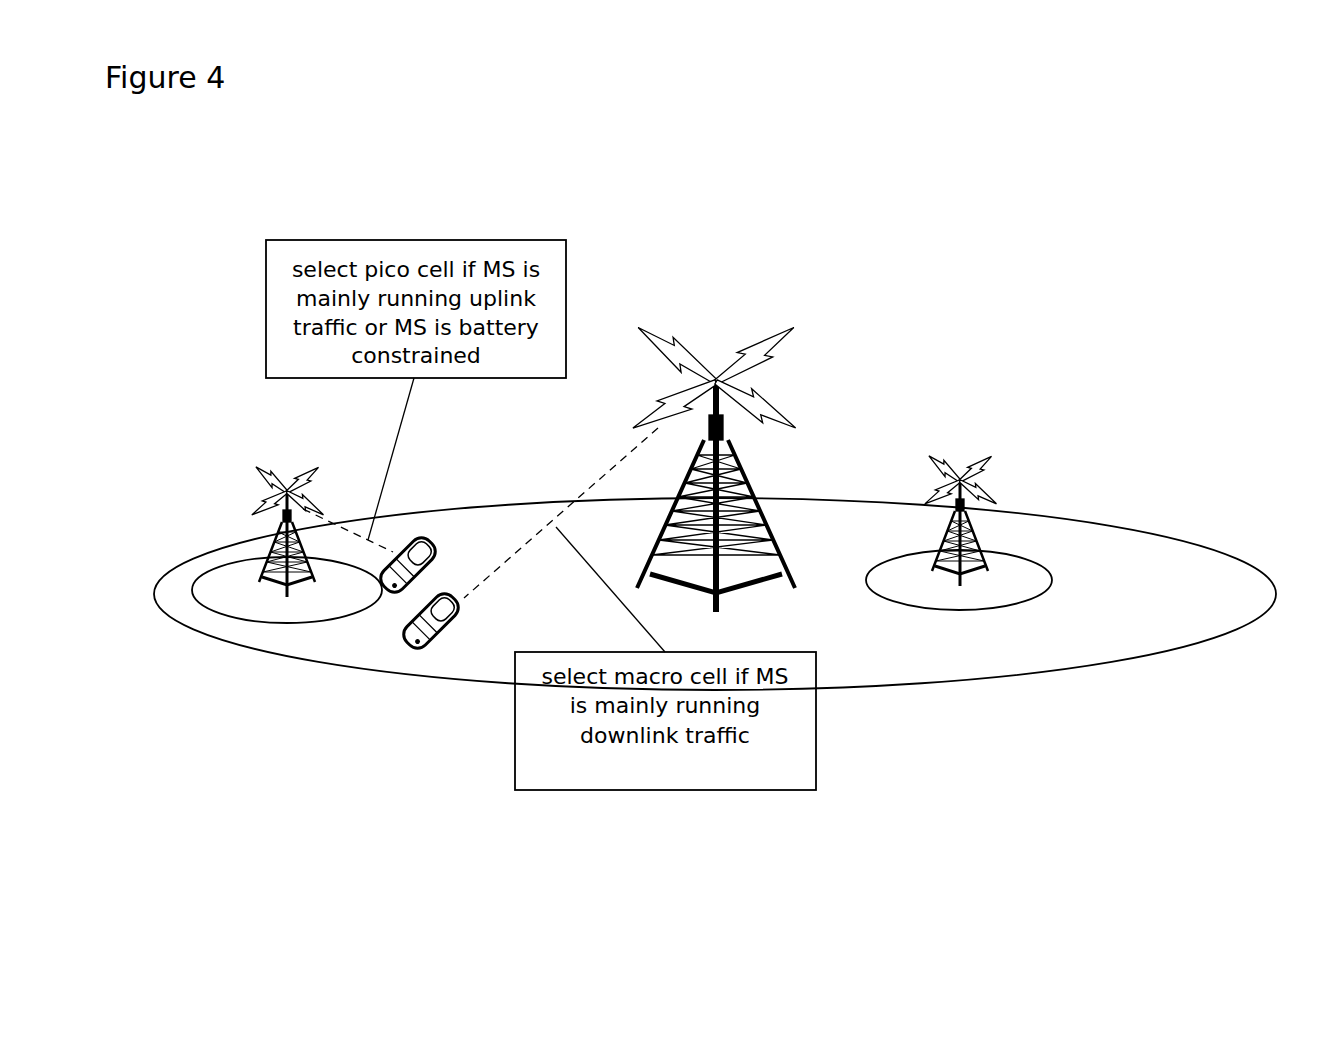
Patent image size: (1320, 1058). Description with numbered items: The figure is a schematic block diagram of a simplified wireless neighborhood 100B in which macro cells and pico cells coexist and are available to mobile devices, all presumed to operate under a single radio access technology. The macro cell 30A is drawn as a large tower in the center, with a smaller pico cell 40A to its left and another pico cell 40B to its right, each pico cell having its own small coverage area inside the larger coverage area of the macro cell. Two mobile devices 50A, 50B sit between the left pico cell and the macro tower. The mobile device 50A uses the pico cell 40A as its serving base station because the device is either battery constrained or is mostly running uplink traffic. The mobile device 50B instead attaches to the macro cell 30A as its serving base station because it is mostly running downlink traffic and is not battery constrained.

The wireless neighborhood 100B is at (728, 117).
The macro cell 30A is at (714, 333).
The pico cell 40A is at (288, 465).
The pico cell 40B is at (960, 467).
The mobile device 50A is at (457, 548).
The mobile device 50B is at (390, 652).